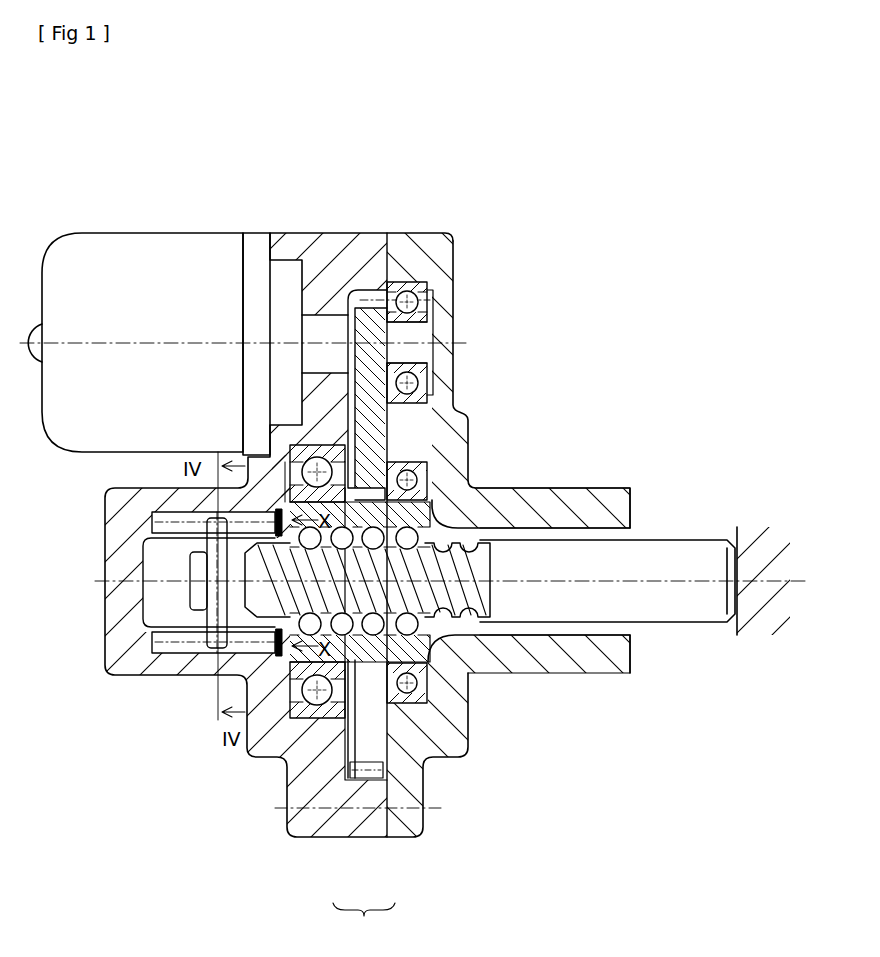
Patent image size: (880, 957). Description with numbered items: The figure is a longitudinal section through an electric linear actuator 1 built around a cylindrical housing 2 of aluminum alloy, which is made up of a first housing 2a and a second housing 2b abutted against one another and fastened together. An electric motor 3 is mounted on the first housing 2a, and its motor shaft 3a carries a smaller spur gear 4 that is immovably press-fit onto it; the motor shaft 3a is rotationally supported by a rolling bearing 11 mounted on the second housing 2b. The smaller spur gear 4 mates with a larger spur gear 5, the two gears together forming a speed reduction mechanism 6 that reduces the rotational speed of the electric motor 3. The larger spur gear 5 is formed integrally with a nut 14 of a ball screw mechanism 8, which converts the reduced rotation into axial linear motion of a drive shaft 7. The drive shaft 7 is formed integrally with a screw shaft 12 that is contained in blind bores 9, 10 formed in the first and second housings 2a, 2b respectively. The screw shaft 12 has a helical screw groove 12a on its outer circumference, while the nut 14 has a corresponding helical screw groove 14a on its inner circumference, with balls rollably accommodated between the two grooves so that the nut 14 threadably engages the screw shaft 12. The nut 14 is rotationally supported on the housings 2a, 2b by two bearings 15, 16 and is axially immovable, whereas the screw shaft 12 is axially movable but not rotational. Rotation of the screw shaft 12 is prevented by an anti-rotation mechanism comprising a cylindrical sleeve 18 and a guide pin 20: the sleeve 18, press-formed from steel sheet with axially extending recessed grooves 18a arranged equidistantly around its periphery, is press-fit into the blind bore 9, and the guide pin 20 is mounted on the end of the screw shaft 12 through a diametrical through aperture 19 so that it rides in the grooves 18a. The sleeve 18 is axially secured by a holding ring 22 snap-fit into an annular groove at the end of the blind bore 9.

The electric linear actuator 1 is at (133, 228).
The housing 2 is at (364, 919).
The first housing 2a is at (350, 840).
The second housing 2b is at (392, 840).
The electric motor 3 is at (188, 280).
The motor shaft 3a is at (320, 357).
The smaller spur gear 4 is at (370, 358).
The larger spur gear 5 is at (368, 415).
The speed reduction mechanism 6 is at (510, 350).
The drive shaft 7 is at (652, 562).
The ball screw mechanism 8 is at (438, 526).
The blind bore 9 is at (197, 637).
The blind bore 10 is at (552, 622).
The rolling bearing 11 is at (420, 302).
The screw shaft 12 is at (590, 547).
The helical screw groove 12a is at (467, 622).
The nut 14 is at (275, 500).
The helical screw groove 14a is at (405, 595).
The bearing 15 is at (285, 700).
The bearing 16 is at (445, 693).
The cylindrical sleeve 18 is at (158, 520).
The recessed grooves 18a is at (162, 648).
The through aperture 19 is at (222, 561).
The guide pin 20 is at (215, 618).
The holding ring 22 is at (247, 670).